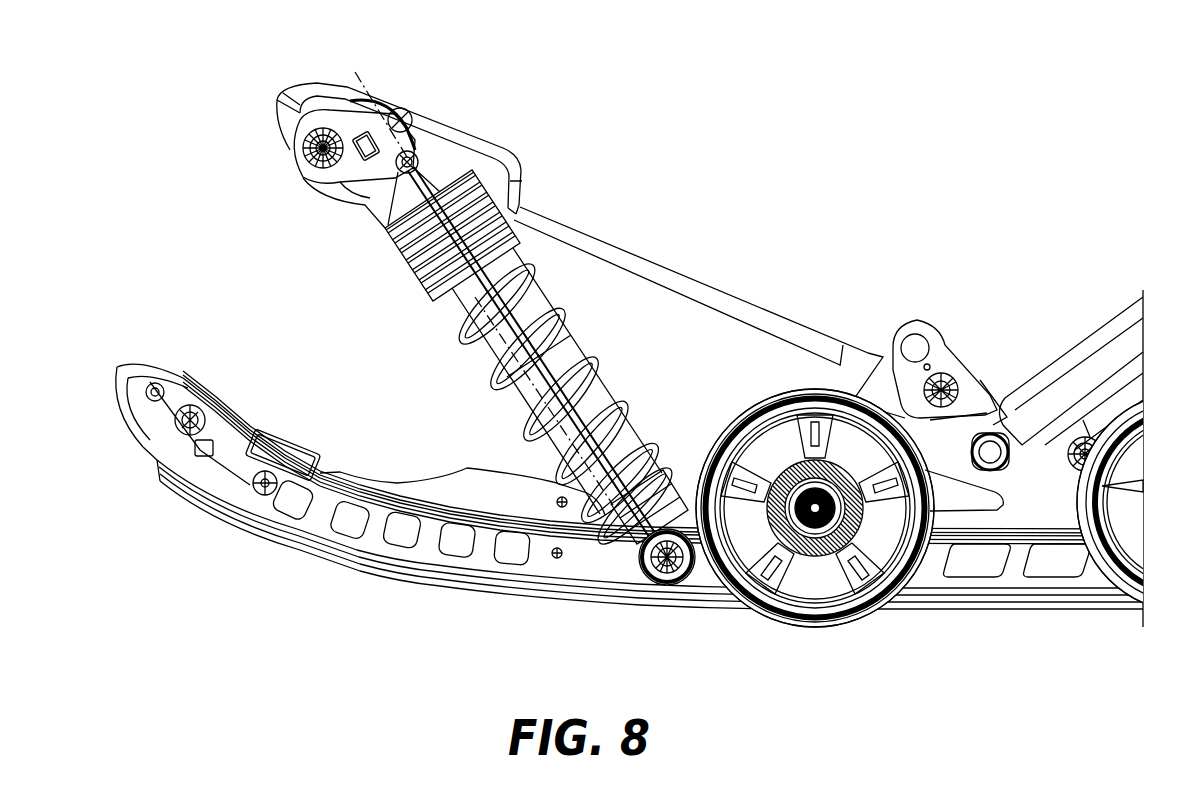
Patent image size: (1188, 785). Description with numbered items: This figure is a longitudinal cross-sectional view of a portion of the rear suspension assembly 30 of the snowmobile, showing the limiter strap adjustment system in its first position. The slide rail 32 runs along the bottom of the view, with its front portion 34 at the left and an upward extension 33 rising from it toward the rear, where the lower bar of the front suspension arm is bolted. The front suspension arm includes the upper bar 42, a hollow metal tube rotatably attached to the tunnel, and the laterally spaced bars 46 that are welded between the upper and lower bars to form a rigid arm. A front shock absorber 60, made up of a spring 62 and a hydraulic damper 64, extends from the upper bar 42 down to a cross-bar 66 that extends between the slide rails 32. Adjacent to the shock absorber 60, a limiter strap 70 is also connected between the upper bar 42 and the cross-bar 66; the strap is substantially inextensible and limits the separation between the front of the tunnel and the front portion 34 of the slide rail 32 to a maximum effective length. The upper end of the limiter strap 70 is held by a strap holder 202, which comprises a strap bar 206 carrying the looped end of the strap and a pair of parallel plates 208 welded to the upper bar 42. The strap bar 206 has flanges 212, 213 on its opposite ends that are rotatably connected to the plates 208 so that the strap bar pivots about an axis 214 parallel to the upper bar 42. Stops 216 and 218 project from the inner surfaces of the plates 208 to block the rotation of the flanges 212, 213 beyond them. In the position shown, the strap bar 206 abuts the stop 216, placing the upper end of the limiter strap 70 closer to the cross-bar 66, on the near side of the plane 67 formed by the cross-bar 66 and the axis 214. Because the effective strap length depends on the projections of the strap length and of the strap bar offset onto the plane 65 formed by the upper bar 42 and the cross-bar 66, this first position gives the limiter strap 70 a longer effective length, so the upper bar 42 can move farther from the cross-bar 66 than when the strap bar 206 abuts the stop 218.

The rear suspension assembly 30 is at (161, 212).
The slide rails 32 is at (1028, 604).
The upward extensions 33 is at (878, 382).
The front portion 34 is at (202, 551).
The upper bar 42 is at (296, 141).
The laterally spaced bars 46 is at (704, 292).
The front shock absorber 60 is at (613, 348).
The spring 62 is at (568, 323).
The hydraulic damper 64 is at (520, 312).
The plane 65 is at (290, 90).
The cross-bar 66 is at (660, 584).
The plane 67 is at (355, 72).
The limiter strap 70 is at (526, 252).
The strap holder 202 is at (331, 278).
The strap bar 206 is at (420, 158).
The plates 208 is at (317, 175).
The flange 212 is at (400, 118).
The flange 213 is at (522, 160).
The axis 214 is at (415, 128).
The stop 216 is at (385, 230).
The stop 218 is at (373, 97).